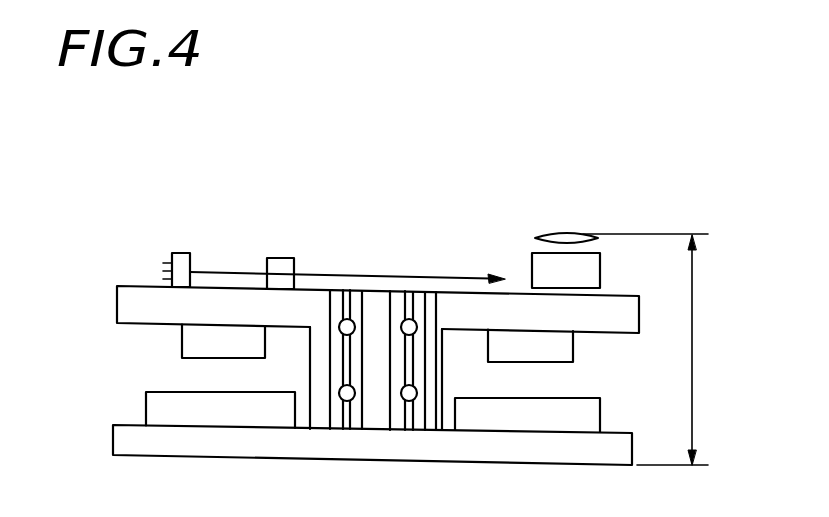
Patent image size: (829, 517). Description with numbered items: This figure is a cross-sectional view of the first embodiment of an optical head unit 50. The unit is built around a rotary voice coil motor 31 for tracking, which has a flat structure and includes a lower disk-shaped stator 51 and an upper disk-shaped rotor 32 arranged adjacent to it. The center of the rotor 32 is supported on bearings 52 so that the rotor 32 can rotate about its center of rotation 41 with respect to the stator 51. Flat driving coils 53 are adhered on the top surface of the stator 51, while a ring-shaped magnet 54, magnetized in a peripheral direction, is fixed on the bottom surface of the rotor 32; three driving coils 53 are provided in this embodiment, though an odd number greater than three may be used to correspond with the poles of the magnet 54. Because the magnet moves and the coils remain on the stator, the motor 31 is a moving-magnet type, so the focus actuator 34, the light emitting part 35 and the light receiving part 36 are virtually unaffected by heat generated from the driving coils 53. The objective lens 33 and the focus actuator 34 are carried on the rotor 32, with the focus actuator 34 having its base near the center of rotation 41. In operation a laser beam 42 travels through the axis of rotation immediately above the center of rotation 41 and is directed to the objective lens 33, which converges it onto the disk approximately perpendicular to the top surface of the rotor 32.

The optical head unit 50 is at (527, 147).
The rotary voice coil motor 31 is at (662, 318).
The rotor 32 is at (618, 333).
The objective lens 33 is at (575, 233).
The focus actuator 34 is at (601, 268).
The light emitting part 35 is at (182, 253).
The light receiving part 36 is at (282, 258).
The center of rotation 41 is at (378, 291).
The laser beam 42 is at (423, 278).
The stator 51 is at (120, 440).
The bearings 52 is at (416, 332).
The driving coils 53 is at (152, 405).
The ring-shaped magnet 54 is at (187, 343).